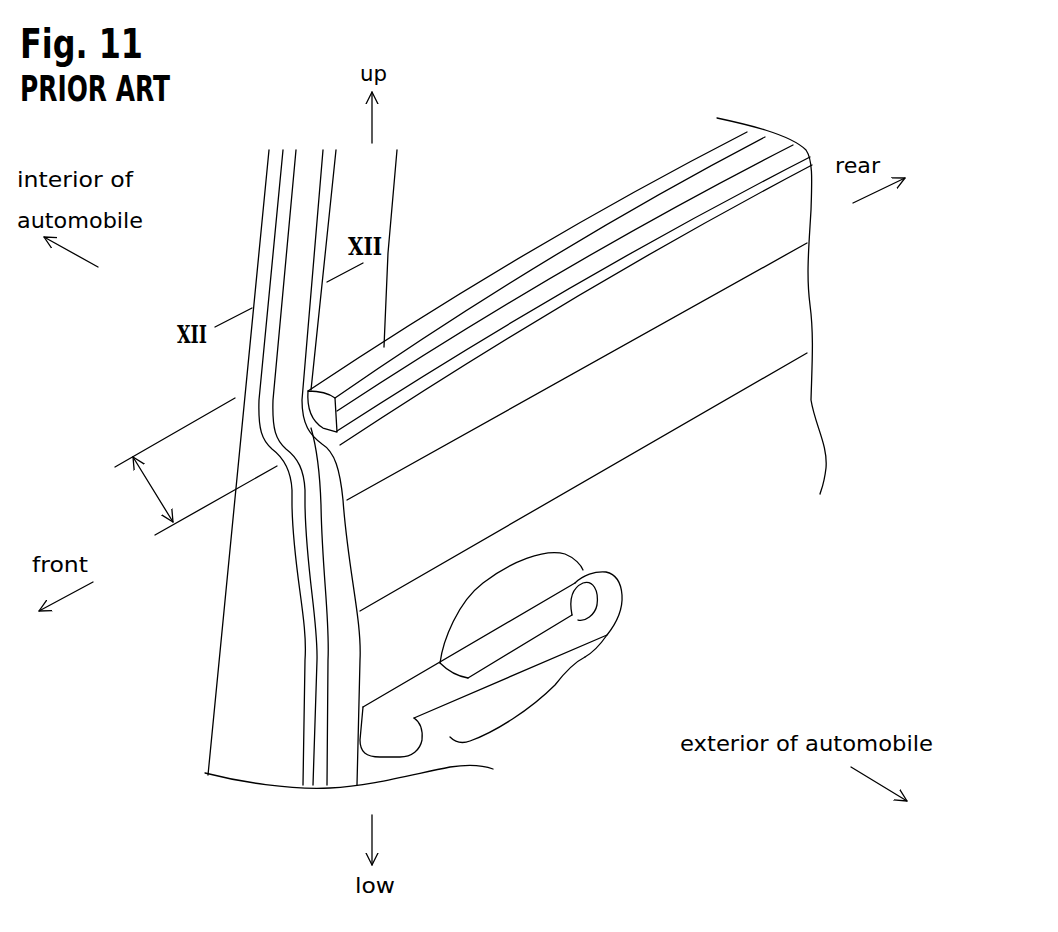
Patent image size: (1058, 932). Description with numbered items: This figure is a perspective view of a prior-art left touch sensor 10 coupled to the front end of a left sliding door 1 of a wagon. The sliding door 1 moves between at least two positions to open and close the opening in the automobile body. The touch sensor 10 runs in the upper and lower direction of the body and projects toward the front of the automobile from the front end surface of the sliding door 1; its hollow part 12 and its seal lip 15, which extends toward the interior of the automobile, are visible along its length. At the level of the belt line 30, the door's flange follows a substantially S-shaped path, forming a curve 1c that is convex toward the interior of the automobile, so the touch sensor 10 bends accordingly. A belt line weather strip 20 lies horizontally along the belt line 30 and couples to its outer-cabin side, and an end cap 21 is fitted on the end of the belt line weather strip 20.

The sliding door 1 is at (598, 707).
The touch sensor 10 is at (297, 677).
The hollow part 12 is at (255, 385).
The seal lip 15 is at (298, 217).
The curve 1c is at (196, 466).
The belt line weather strip 20 is at (638, 220).
The end cap 21 is at (333, 387).
The belt line 30 is at (712, 217).